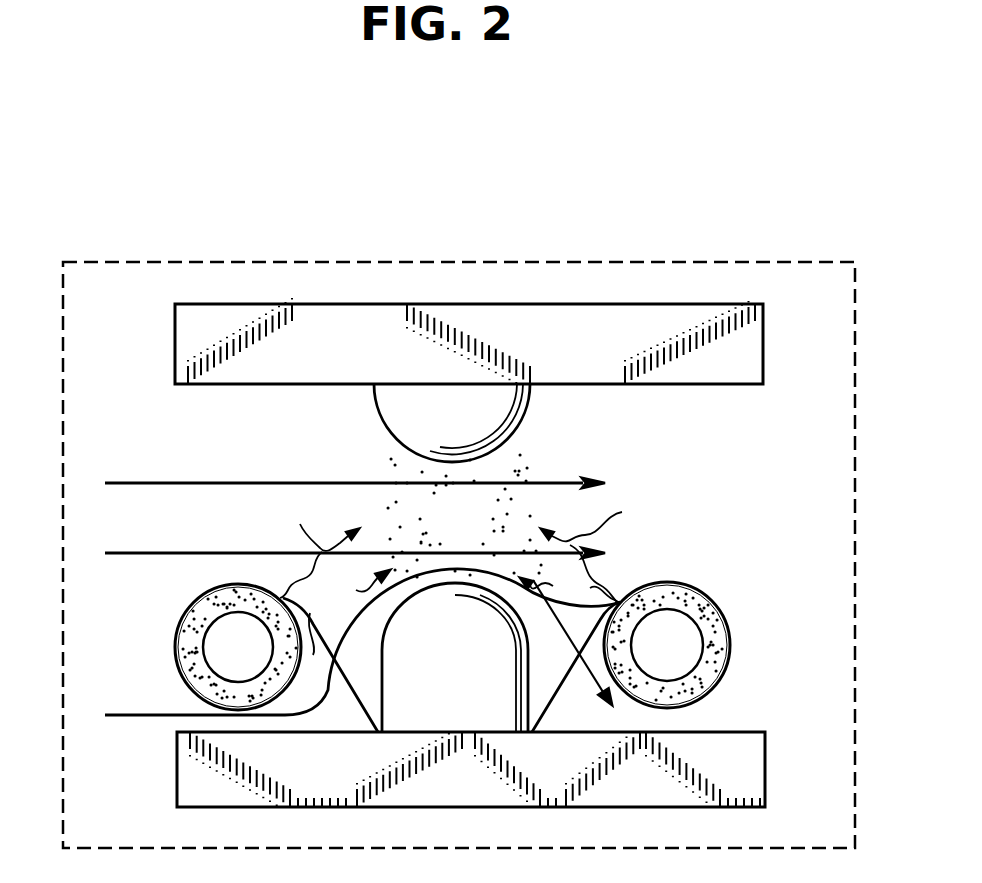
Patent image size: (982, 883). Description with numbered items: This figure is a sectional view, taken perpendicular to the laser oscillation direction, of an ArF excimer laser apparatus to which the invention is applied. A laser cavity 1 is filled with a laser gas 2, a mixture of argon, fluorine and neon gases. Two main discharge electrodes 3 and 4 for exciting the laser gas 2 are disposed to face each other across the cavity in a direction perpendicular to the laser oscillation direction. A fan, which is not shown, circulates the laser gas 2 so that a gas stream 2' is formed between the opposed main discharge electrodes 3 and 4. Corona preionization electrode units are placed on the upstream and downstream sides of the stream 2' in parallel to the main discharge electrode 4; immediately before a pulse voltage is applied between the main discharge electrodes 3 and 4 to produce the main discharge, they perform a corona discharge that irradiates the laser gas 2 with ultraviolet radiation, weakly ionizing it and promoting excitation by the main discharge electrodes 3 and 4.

The laser cavity 1 is at (440, 262).
The laser gas 2 is at (464, 516).
The gas stream 2' is at (362, 592).
The main discharge electrode 3 is at (378, 416).
The main discharge electrode 4 is at (461, 642).